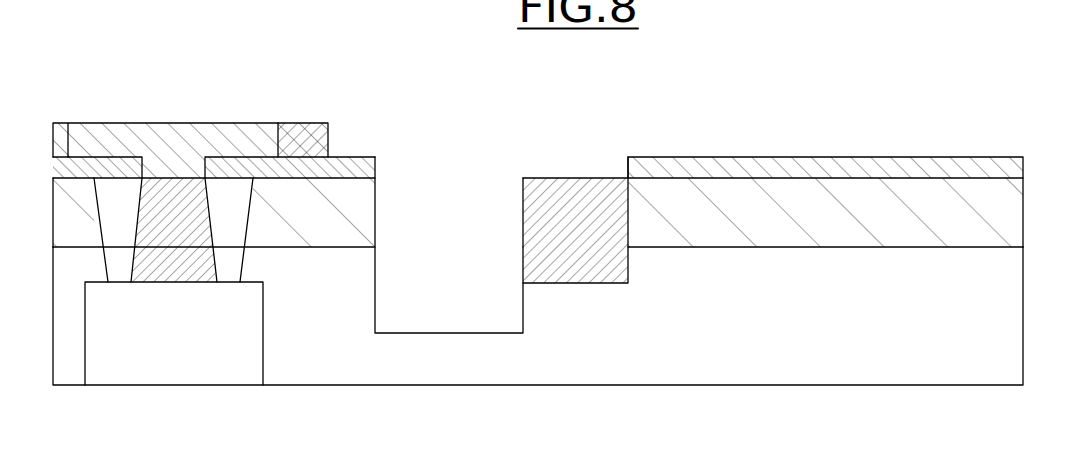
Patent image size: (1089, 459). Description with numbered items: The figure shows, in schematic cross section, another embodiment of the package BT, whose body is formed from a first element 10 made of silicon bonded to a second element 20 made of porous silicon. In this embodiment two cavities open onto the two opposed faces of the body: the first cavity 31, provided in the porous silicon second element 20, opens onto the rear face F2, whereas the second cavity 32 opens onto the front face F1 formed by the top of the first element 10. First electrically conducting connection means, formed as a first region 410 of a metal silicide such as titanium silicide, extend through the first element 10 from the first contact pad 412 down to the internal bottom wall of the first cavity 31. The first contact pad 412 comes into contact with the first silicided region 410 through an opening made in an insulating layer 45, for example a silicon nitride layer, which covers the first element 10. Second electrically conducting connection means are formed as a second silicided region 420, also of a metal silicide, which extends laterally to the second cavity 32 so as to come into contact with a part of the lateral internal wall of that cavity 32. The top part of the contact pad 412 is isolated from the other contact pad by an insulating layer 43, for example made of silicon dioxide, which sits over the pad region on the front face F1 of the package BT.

The first element 10 is at (1017, 206).
The second element 20 is at (1017, 313).
The first cavity 31 is at (162, 346).
The second cavity 32 is at (435, 268).
The first region 410 is at (178, 202).
The first contact pad 412 is at (248, 140).
The second region 420 is at (582, 205).
The insulating layer 43 is at (302, 130).
The insulating layer 45 is at (742, 172).
The front face F1 is at (430, 178).
The rear face F2 is at (293, 386).
The package BT is at (1029, 100).